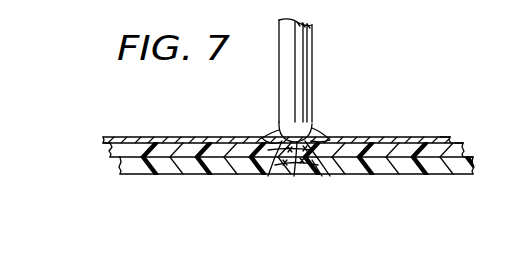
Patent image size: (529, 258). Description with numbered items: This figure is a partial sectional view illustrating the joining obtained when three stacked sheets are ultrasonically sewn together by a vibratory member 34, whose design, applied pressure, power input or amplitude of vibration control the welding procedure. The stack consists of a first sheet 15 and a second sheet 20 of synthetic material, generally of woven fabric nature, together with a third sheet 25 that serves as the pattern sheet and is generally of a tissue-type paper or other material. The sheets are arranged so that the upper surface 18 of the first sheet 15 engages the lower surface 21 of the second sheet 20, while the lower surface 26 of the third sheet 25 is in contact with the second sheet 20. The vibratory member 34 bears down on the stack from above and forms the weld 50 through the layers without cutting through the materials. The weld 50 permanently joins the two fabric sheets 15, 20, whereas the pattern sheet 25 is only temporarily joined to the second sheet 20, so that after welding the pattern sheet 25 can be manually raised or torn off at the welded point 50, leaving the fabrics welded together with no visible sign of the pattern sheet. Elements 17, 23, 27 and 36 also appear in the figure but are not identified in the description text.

The first sheet 15 is at (263, 158).
The bottom layer 17 is at (158, 176).
The upper surface 18 is at (471, 163).
The second sheet 20 is at (114, 151).
The lower surface 21 is at (119, 161).
The middle layer right end 23 is at (461, 148).
The third sheet 25 is at (103, 139).
The lower surface 26 is at (111, 148).
The top layer right end 27 is at (445, 137).
The vibratory member 34 is at (312, 55).
The indented zone 36 is at (266, 137).
The weld 50 is at (313, 128).